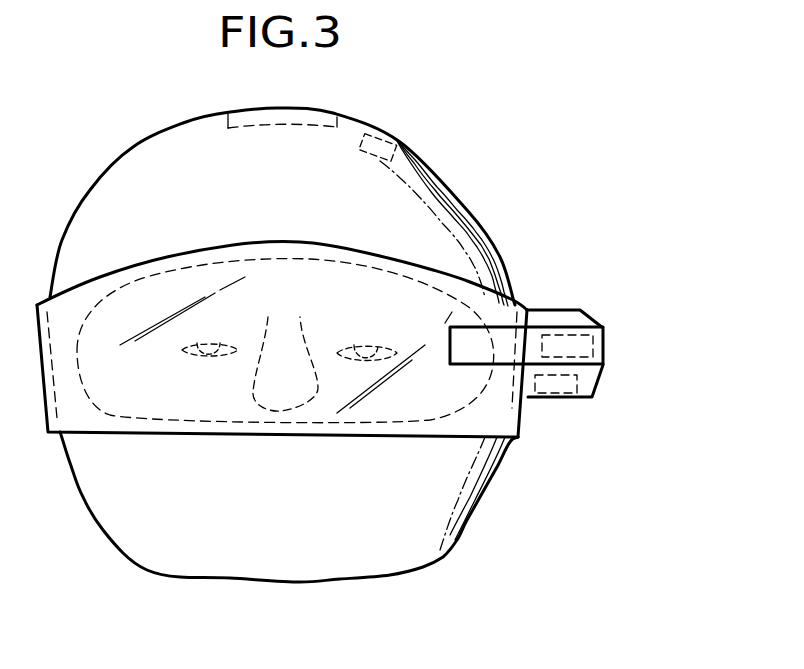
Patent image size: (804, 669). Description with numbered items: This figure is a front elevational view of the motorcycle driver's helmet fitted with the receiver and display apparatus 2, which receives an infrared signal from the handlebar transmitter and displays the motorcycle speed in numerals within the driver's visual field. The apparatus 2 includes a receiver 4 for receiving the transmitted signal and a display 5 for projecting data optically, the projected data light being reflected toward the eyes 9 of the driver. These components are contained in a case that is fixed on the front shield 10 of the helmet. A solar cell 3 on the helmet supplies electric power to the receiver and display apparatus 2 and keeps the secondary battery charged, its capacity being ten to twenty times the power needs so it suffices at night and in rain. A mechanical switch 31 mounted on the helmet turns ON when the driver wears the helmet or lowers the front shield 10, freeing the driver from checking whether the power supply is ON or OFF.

The receiver and display apparatus 2 is at (543, 308).
The solar cell 3 is at (330, 122).
The mechanical switch 31 is at (397, 143).
The receiver 4 is at (577, 383).
The display 5 is at (593, 342).
The eyes 9 is at (375, 365).
The front shield 10 is at (455, 272).